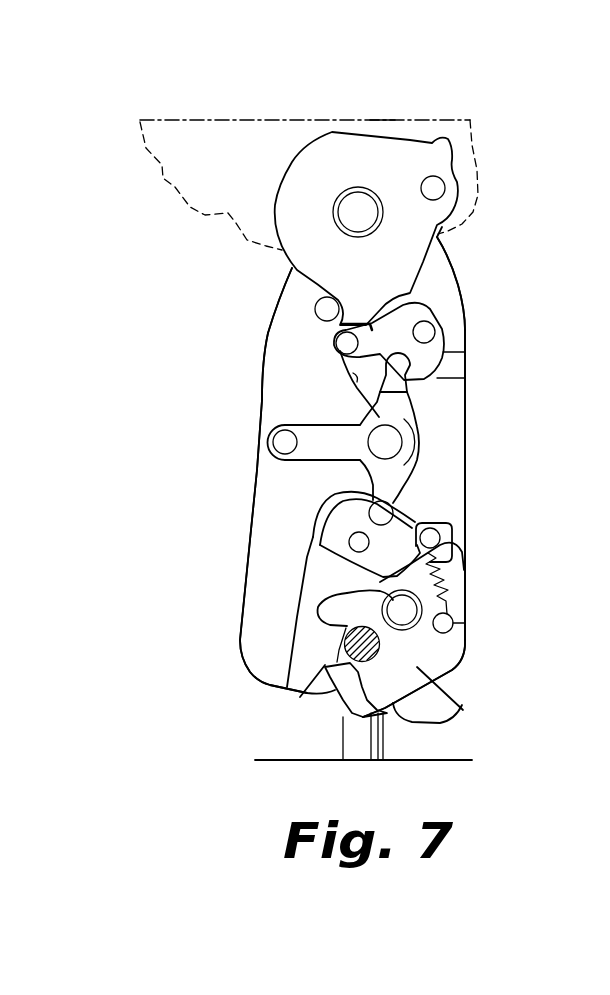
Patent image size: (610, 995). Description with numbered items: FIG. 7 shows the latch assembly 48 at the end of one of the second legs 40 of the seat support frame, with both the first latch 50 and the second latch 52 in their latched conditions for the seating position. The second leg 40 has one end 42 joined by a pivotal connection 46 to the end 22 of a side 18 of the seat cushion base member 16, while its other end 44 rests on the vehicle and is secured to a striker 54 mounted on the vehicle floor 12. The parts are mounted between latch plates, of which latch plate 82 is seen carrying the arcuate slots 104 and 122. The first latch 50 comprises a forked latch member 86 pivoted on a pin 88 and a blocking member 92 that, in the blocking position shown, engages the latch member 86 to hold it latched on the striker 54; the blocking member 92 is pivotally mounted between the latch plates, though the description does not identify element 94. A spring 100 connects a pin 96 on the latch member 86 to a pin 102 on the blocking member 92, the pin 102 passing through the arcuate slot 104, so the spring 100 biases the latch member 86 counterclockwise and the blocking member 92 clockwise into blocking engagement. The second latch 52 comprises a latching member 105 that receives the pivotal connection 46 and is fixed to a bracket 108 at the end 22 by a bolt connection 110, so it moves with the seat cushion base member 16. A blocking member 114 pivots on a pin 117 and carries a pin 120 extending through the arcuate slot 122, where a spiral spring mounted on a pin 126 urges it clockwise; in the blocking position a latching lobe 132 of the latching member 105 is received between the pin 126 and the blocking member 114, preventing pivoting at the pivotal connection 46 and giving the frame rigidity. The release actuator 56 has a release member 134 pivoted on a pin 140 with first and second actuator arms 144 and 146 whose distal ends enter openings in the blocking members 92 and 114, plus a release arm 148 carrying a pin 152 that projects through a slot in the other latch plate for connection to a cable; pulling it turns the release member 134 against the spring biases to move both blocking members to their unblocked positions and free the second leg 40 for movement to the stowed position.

The vehicle floor 12 is at (275, 760).
The seat cushion base member 16 is at (205, 108).
The side 18 is at (274, 108).
The end 22 is at (382, 120).
The second leg 40 is at (493, 564).
The end 42 is at (290, 285).
The end 44 is at (238, 627).
The pivotal connection 46 is at (358, 212).
The latch assembly 48 is at (478, 467).
The first latch 50 is at (475, 652).
The second latch 52 is at (458, 250).
The floor mounted striker 54 is at (343, 683).
The release actuator 56 is at (248, 457).
The latch plate 82 is at (260, 377).
The latch member 86 is at (463, 710).
The pin 88 is at (350, 590).
The blocking member 92 is at (359, 542).
The pawl 94 is at (307, 553).
The pin 96 is at (443, 623).
The spring 100 is at (447, 578).
The pin 102 is at (440, 568).
The arcuate slot 104 is at (452, 527).
The latching member 105 is at (305, 198).
The bracket 108 is at (442, 120).
The bolt connection 110 is at (433, 188).
The blocking member 114 is at (410, 315).
The pin 117 is at (424, 332).
The pin 120 is at (347, 343).
The arcuate slot 122 is at (355, 380).
The pin 126 is at (325, 310).
The latching lobe 132 is at (343, 324).
The release member 134 is at (387, 441).
The pin 140 is at (407, 417).
The first actuator arm 144 is at (395, 503).
The second actuator arm 146 is at (410, 385).
The release arm 148 is at (318, 447).
The pin 152 is at (283, 445).